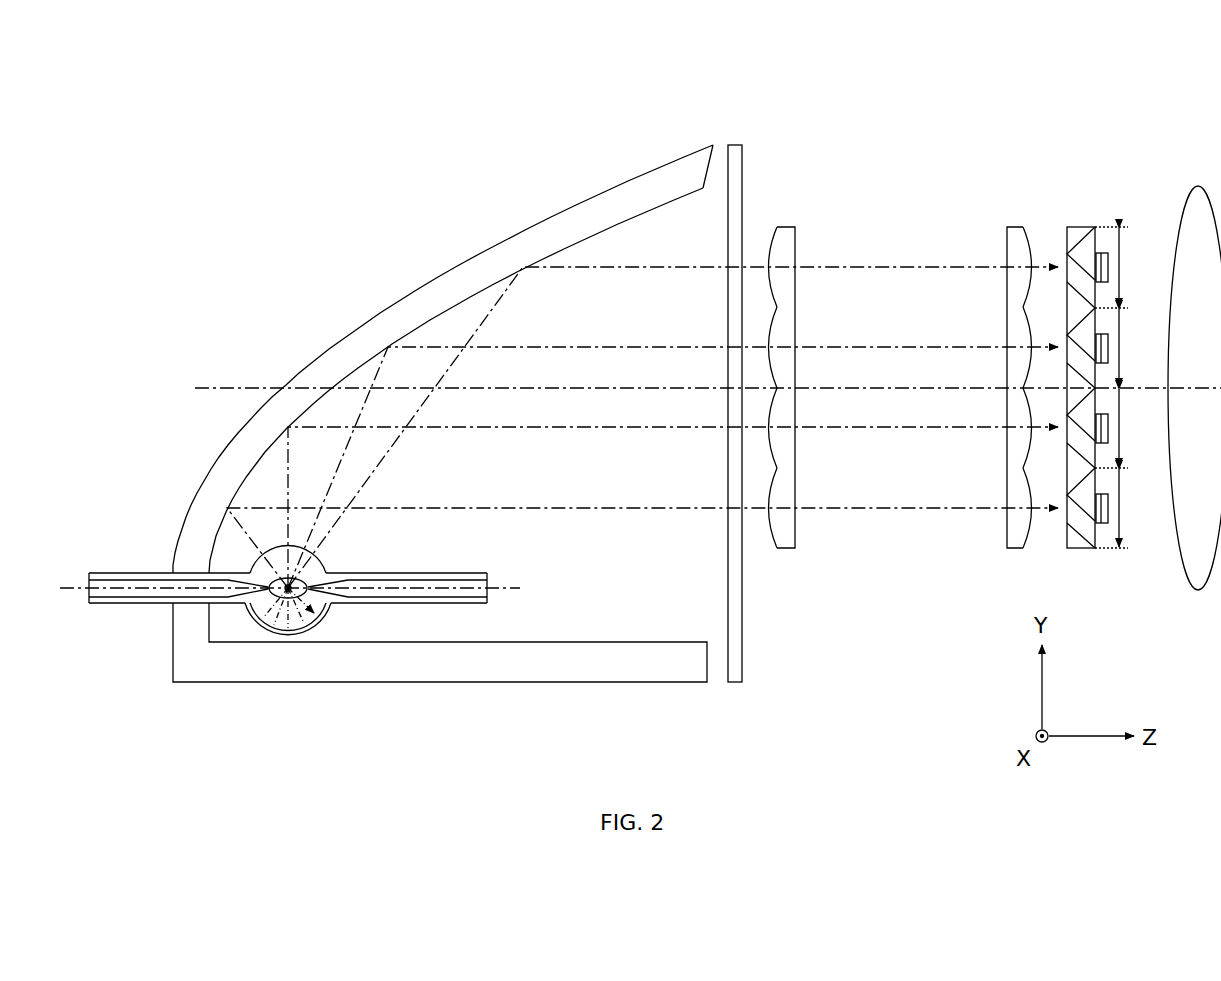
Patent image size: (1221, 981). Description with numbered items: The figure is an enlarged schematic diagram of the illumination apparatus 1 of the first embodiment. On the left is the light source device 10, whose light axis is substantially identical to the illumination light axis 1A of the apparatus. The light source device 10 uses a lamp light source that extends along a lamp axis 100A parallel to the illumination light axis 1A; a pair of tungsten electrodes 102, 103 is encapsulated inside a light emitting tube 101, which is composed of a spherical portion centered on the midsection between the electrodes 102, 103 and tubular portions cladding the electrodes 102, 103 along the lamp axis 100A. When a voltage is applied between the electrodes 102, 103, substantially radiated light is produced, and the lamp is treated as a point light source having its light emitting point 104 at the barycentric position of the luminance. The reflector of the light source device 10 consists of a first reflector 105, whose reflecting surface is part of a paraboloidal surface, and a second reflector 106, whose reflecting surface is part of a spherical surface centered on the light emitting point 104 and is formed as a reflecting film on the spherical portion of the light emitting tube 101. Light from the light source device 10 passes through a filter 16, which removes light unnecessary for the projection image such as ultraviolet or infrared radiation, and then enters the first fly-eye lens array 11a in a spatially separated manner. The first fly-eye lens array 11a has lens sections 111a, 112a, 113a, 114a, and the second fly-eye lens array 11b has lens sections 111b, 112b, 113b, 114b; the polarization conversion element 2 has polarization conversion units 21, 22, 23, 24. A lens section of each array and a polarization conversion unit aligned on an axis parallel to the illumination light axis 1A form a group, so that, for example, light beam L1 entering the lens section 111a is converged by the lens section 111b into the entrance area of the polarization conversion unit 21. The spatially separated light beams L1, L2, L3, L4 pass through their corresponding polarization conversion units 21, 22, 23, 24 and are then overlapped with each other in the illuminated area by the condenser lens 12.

The illumination apparatus 1 is at (1134, 96).
The illumination light axis 1A is at (232, 387).
The polarization conversion element 2 is at (1087, 221).
The light source device 10 is at (338, 266).
The condenser lens 12 is at (1200, 194).
The filter 16 is at (736, 145).
The polarization conversion unit 21 is at (1123, 508).
The polarization conversion unit 22 is at (1123, 428).
The polarization conversion unit 23 is at (1123, 348).
The polarization conversion unit 24 is at (1123, 267).
The lamp axis 100A is at (77, 585).
The light emitting tube 101 is at (297, 622).
The electrode 102 is at (142, 592).
The electrode 103 is at (420, 592).
The light emitting point 104 is at (256, 623).
The first reflector 105 is at (603, 230).
The second reflector 106 is at (320, 623).
The first fly-eye lens array 11a is at (790, 221).
The second fly-eye lens array 11b is at (1012, 221).
The lens section 111a is at (778, 500).
The lens section 112a is at (778, 419).
The lens section 113a is at (778, 338).
The lens section 114a is at (778, 258).
The lens section 111b is at (1022, 500).
The lens section 112b is at (1022, 419).
The lens section 113b is at (1022, 338).
The lens section 114b is at (1022, 258).
The light beam L1 is at (878, 510).
The light beam L2 is at (878, 430).
The light beam L3 is at (878, 350).
The light beam L4 is at (878, 270).